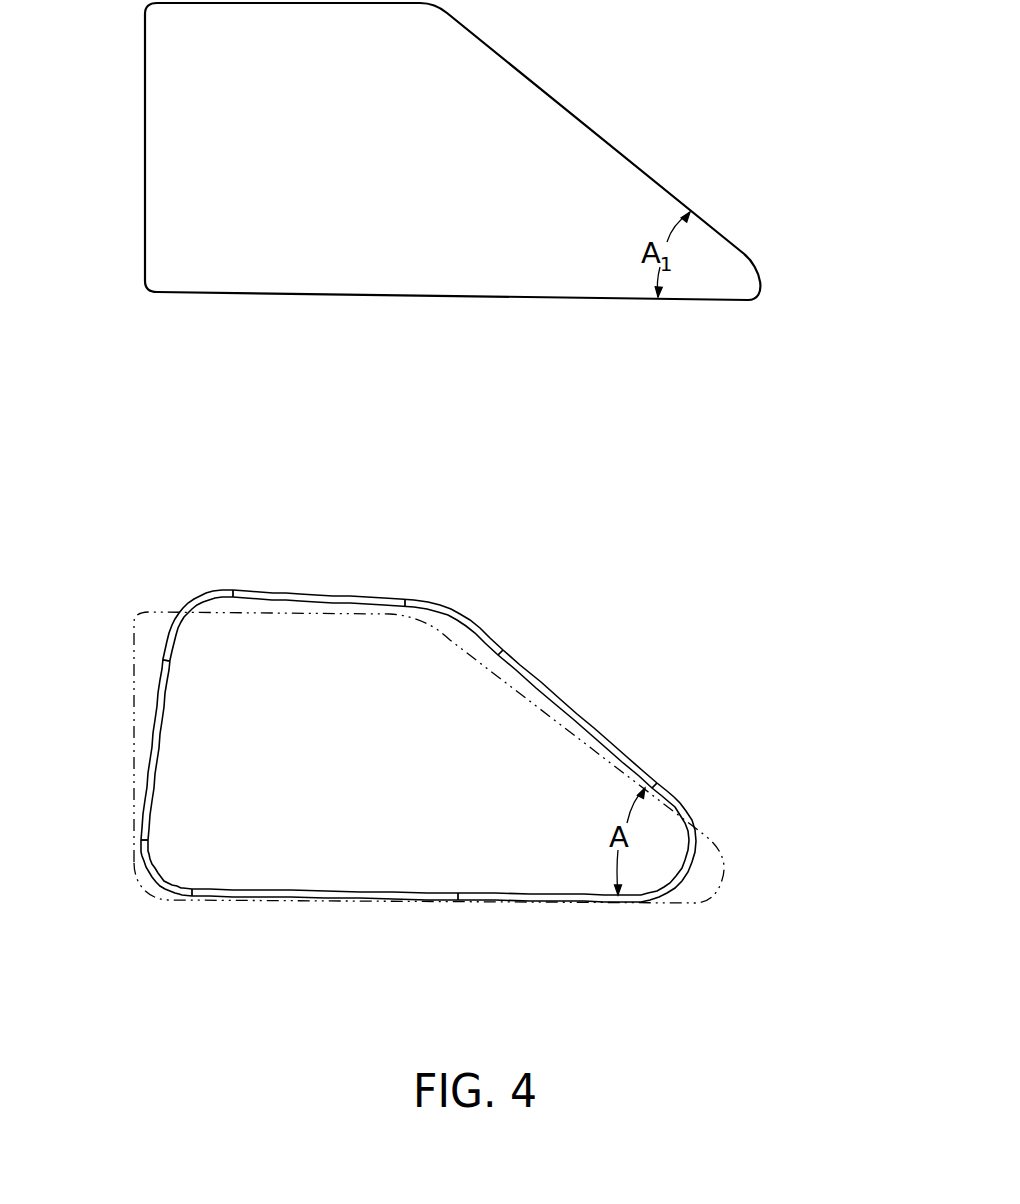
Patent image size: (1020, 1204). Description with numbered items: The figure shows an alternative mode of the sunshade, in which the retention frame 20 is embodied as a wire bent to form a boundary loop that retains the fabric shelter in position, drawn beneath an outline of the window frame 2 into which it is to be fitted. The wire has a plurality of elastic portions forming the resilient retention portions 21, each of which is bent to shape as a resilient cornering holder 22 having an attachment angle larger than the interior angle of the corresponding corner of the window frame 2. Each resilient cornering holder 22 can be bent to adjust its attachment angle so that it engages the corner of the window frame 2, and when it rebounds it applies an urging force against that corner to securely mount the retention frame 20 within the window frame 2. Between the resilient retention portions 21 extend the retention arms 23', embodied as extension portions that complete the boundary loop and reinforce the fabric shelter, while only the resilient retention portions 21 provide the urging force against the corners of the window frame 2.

The window frame 2 is at (720, 207).
The retention frame 20 is at (840, 683).
The resilient retention portion 21 is at (197, 593).
The resilient cornering holder 22 is at (130, 625).
The retention arm 23' is at (393, 722).